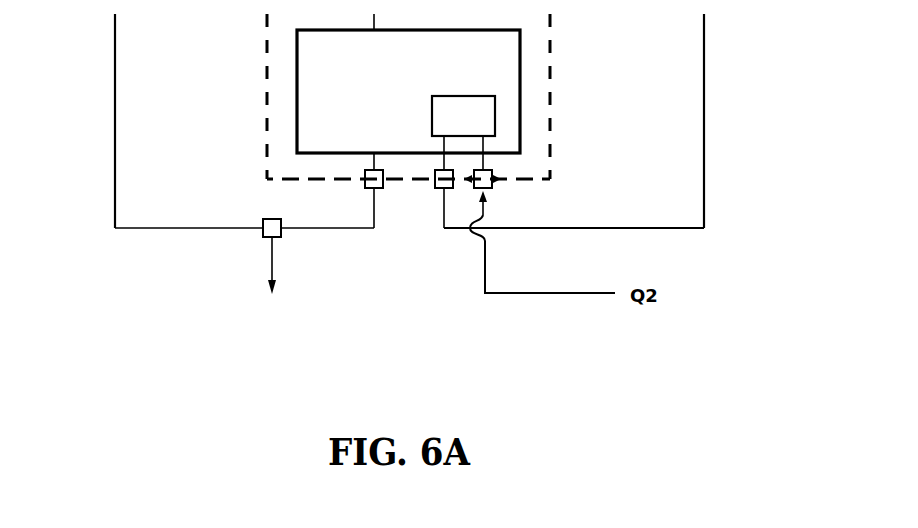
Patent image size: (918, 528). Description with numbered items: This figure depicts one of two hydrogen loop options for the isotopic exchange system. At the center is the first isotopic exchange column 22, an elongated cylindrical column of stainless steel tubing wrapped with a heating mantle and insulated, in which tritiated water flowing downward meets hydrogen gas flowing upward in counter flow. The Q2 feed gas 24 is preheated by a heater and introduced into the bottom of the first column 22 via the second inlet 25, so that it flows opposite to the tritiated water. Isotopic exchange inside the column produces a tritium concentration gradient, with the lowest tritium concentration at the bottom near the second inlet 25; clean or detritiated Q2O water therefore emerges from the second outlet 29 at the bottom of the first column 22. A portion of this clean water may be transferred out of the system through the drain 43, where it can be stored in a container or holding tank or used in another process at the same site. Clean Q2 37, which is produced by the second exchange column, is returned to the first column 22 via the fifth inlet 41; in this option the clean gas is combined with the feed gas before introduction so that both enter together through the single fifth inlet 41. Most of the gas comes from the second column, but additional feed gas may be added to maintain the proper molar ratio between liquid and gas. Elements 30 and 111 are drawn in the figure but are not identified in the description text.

The left conduit wall / supply line 30 is at (115, 62).
The clean Q2 37 is at (704, 72).
The first isotopic exchange column 22 is at (551, 52).
The controller module 111 is at (495, 113).
The second outlet 29 is at (364, 190).
The fifth inlet 41 is at (437, 190).
The second inlet 25 is at (492, 185).
The drain 43 is at (272, 258).
The Q2 feed gas 24 is at (528, 296).